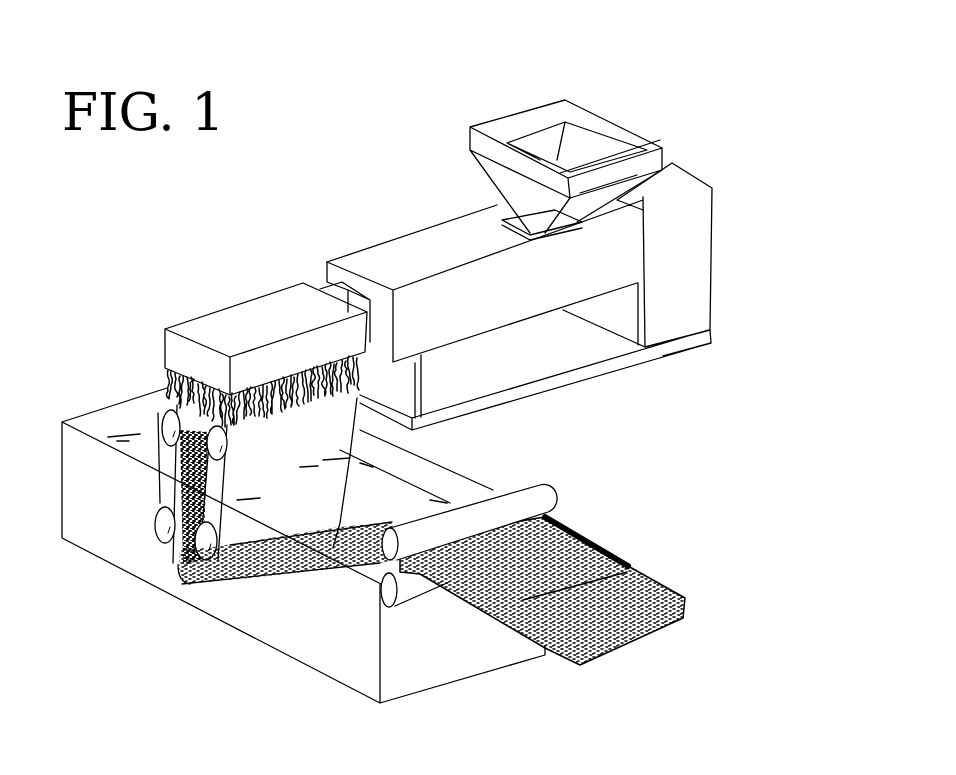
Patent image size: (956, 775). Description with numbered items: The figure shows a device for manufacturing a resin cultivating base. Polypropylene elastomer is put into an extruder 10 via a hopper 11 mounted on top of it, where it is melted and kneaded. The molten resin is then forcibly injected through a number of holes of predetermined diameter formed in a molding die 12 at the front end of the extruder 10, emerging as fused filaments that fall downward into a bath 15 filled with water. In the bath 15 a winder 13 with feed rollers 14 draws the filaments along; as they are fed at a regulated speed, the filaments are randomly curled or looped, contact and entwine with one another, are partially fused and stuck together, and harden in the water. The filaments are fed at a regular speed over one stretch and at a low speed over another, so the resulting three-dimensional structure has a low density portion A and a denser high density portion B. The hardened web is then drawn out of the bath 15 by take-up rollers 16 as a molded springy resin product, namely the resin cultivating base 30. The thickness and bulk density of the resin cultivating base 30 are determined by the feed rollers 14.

The extruder 10 is at (417, 225).
The hopper 11 is at (577, 143).
The molding die 12 is at (260, 322).
The winder 13 is at (352, 455).
The feed rollers 14 is at (178, 560).
The bath 15 is at (143, 437).
The take-up rollers 16 is at (542, 485).
The low density portion A is at (647, 573).
The high density portion B is at (262, 576).
The resin cultivating base 30 is at (592, 579).